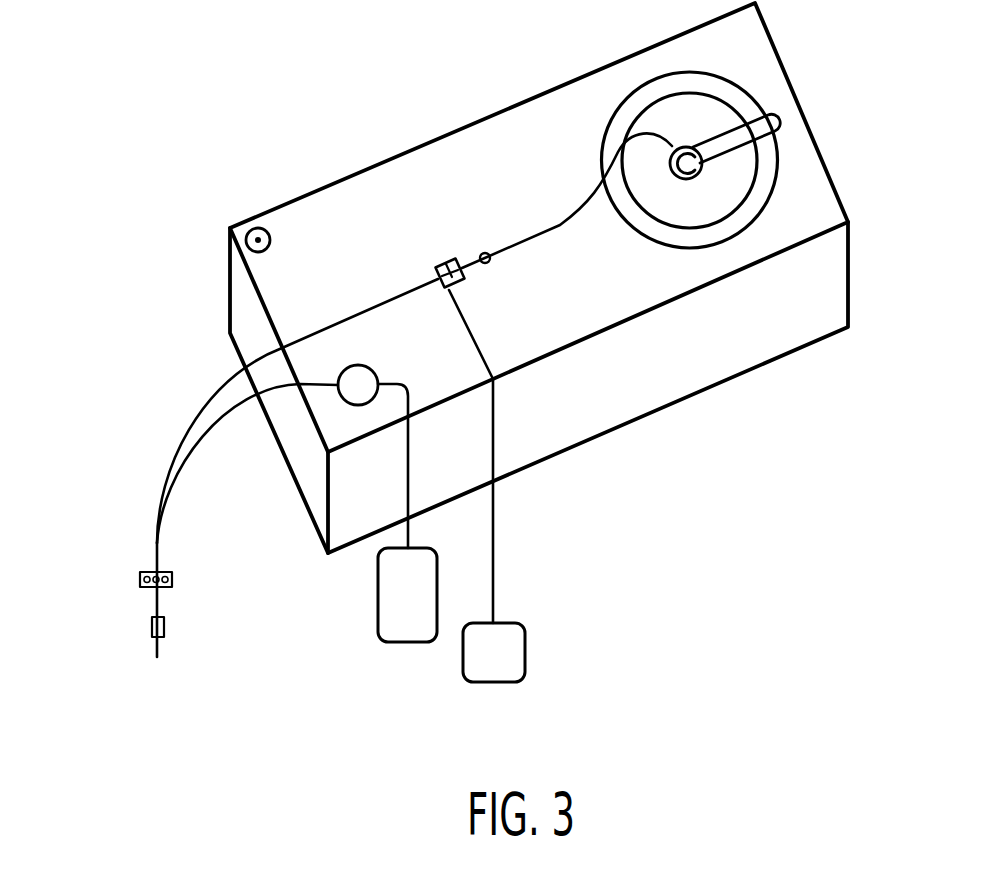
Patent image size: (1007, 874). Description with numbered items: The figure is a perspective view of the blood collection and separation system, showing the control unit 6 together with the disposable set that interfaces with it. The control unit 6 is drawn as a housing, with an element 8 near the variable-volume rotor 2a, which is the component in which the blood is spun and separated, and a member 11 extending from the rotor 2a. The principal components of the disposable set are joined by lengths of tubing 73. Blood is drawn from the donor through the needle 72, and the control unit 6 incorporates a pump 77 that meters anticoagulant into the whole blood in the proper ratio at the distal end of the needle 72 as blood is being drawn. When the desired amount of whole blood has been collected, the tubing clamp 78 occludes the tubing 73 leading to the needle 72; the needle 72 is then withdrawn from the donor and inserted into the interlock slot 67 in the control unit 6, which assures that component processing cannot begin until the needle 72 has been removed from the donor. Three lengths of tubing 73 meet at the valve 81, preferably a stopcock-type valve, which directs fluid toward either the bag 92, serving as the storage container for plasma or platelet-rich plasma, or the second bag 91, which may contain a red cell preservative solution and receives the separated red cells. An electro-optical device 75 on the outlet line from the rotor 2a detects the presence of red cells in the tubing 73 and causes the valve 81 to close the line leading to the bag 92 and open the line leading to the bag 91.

The control unit 6 is at (756, 57).
The wheel 8 is at (774, 170).
The variable-volume rotor 2a is at (661, 218).
The crank handle 11 is at (772, 112).
The interlock slot 67 is at (254, 228).
The tubing 73 is at (550, 232).
The valve 81 is at (455, 258).
The electro-optical device 75 is at (487, 264).
The pump 77 is at (377, 367).
The tubing clamp 78 is at (140, 582).
The needle 72 is at (163, 646).
The bag 92 is at (378, 606).
The second bag 91 is at (465, 678).